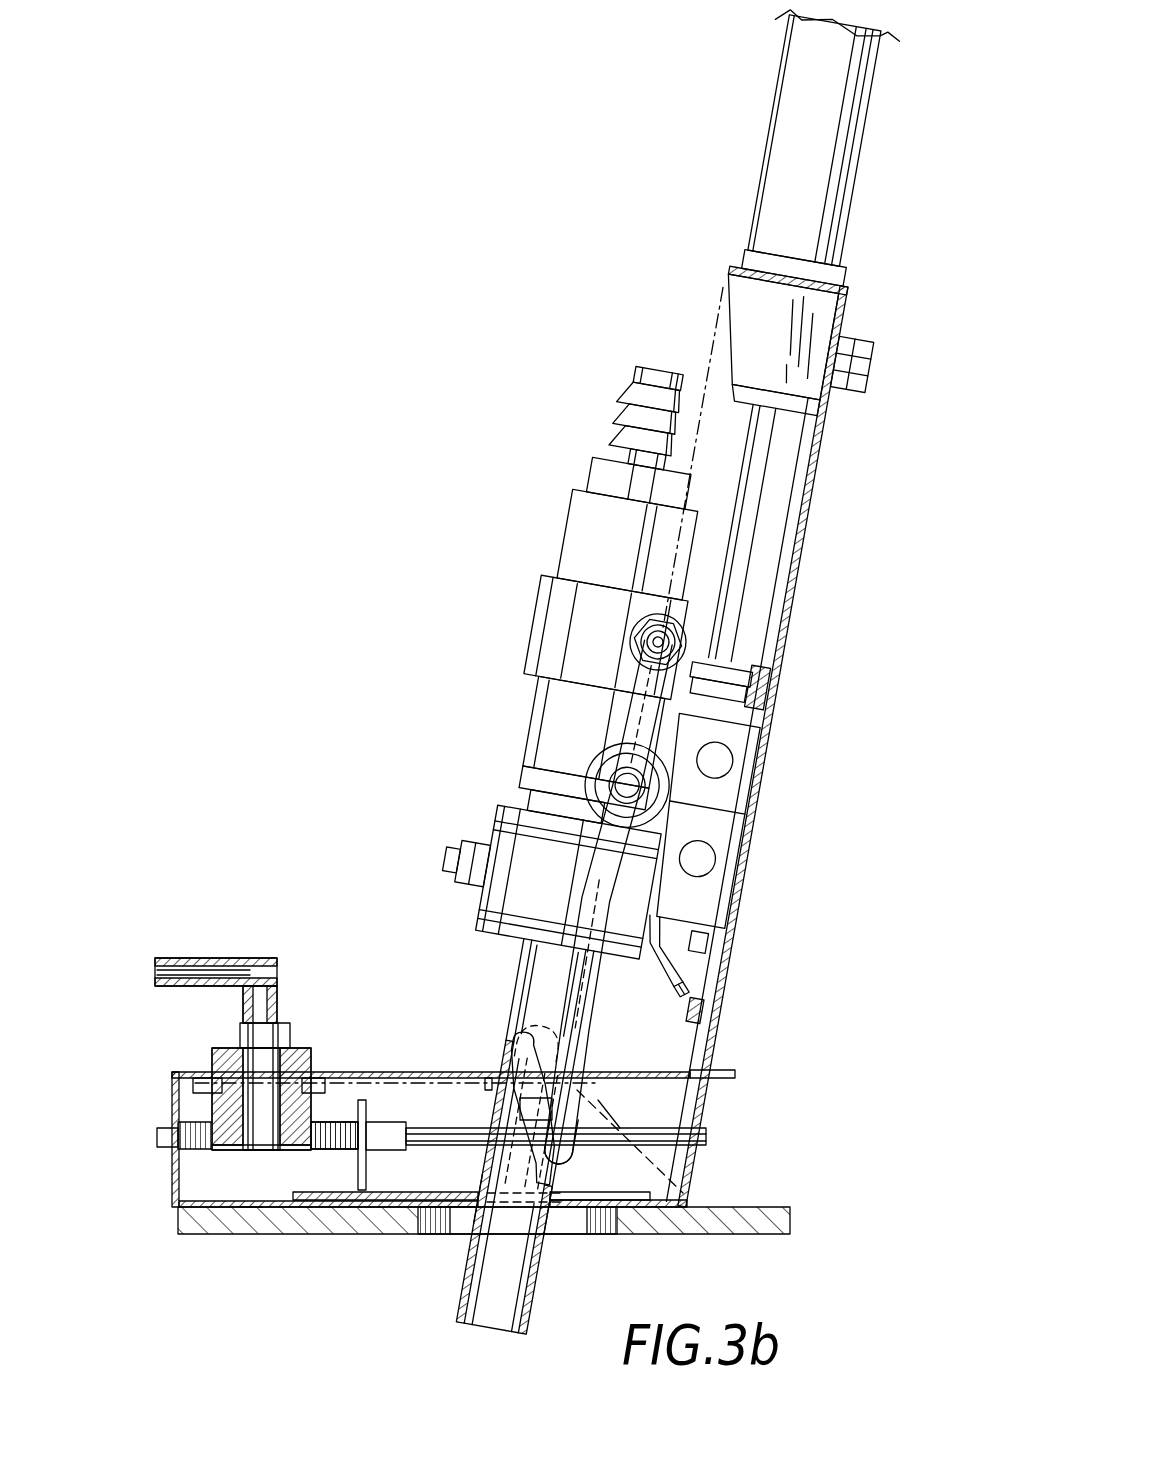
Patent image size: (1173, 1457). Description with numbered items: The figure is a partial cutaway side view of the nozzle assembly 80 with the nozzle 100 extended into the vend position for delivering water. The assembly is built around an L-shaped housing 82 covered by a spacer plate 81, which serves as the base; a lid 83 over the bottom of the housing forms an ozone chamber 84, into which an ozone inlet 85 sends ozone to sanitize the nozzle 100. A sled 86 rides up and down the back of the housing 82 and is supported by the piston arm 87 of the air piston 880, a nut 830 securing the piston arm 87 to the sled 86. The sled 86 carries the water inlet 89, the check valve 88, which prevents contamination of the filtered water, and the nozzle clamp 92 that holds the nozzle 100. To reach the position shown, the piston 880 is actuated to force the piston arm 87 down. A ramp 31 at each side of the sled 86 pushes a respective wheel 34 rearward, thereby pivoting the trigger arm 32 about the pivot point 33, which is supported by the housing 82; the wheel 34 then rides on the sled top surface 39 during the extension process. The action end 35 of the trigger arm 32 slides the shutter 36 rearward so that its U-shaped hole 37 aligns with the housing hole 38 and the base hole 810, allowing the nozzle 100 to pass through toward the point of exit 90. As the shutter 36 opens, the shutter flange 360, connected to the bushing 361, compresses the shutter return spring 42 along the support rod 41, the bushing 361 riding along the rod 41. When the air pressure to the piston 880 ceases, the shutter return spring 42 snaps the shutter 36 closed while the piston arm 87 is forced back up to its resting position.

The nozzle assembly 80 is at (452, 233).
The air piston 880 is at (756, 183).
The L-shaped housing 82 is at (850, 305).
The piston arm 87 is at (768, 452).
The water inlet 89 is at (628, 373).
The check valve 88 is at (542, 618).
The pivot point 33 is at (662, 642).
The nut 830 is at (732, 686).
The sled top surface 39 is at (763, 746).
The sled 86 is at (732, 752).
The wheel 34 is at (667, 800).
The trigger arm 32 is at (603, 1035).
The action end 35 is at (575, 1160).
The nozzle clamp 92 is at (532, 831).
The ramp 31 is at (697, 992).
The nozzle 100 is at (547, 986).
The point of exit 90 is at (462, 1318).
The housing hole 38 is at (548, 1215).
The shutter 36 is at (540, 1048).
The bushing 361 is at (386, 1130).
The support rod 41 is at (712, 1136).
The shutter return spring 42 is at (192, 1140).
The ozone inlet 85 is at (220, 966).
The lid 83 is at (350, 1075).
The ozone chamber 84 is at (230, 1181).
The spacer plate 81 is at (302, 1237).
The U-shaped hole 37 is at (452, 1222).
The base hole 810 is at (584, 1236).
The shutter flange 360 is at (253, 1233).